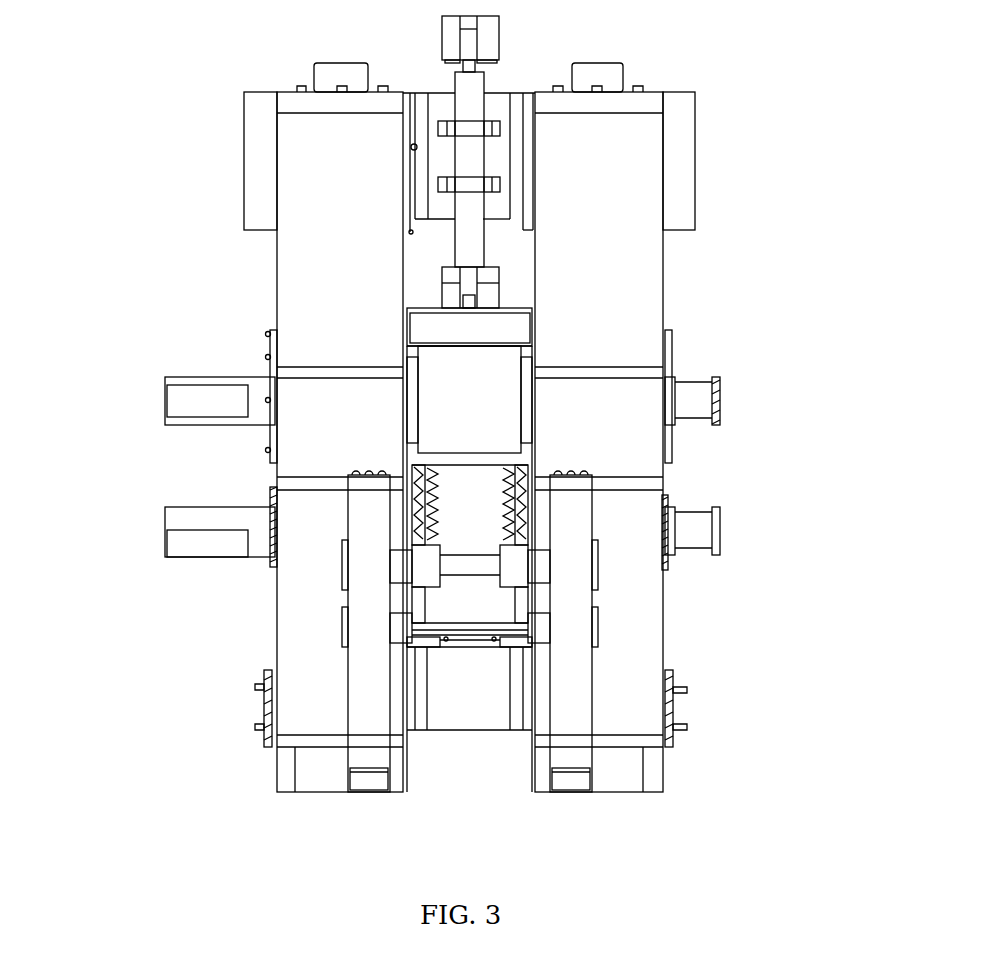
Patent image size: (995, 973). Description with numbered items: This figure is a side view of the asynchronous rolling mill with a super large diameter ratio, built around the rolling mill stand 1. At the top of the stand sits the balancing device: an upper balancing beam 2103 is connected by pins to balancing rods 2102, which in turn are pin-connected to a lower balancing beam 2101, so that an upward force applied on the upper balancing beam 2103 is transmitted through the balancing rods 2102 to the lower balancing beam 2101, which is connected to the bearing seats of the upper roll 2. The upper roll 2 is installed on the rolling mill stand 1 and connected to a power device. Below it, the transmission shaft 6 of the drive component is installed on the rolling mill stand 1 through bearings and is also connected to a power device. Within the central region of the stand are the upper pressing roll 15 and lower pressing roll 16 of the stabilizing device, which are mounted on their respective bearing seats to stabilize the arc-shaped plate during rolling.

The rolling mill stand 1 is at (602, 332).
The upper roll 2 is at (207, 417).
The transmission shaft 6 is at (223, 507).
The upper pressing roll 15 is at (422, 565).
The lower pressing roll 16 is at (410, 645).
The lower balancing beam 2101 is at (497, 275).
The balancing rod 2102 is at (473, 205).
The upper balancing beam 2103 is at (496, 37).